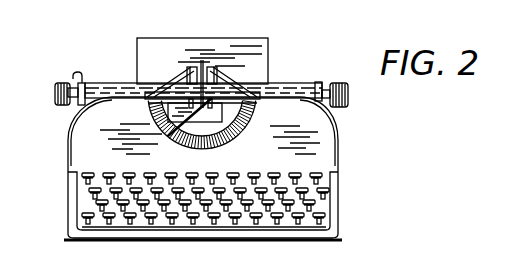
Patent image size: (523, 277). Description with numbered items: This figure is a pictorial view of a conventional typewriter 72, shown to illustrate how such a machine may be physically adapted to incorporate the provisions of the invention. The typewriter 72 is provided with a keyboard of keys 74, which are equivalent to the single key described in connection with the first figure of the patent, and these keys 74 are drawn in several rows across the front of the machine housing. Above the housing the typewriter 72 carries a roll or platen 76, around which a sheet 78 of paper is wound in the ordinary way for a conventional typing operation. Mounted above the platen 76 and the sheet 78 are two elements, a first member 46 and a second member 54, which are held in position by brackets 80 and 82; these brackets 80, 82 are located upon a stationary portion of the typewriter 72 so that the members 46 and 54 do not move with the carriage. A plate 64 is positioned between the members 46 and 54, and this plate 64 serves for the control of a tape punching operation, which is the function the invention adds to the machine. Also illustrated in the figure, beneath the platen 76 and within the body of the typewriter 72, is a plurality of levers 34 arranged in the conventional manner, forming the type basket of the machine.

The levers 34 is at (148, 119).
The member 46 is at (185, 80).
The member 54 is at (212, 80).
The plate 64 is at (202, 83).
The typewriter 72 is at (337, 163).
The keys 74 is at (278, 216).
The platen 76 is at (95, 86).
The sheet of paper 78 is at (270, 46).
The bracket 80 is at (99, 92).
The bracket 82 is at (263, 67).